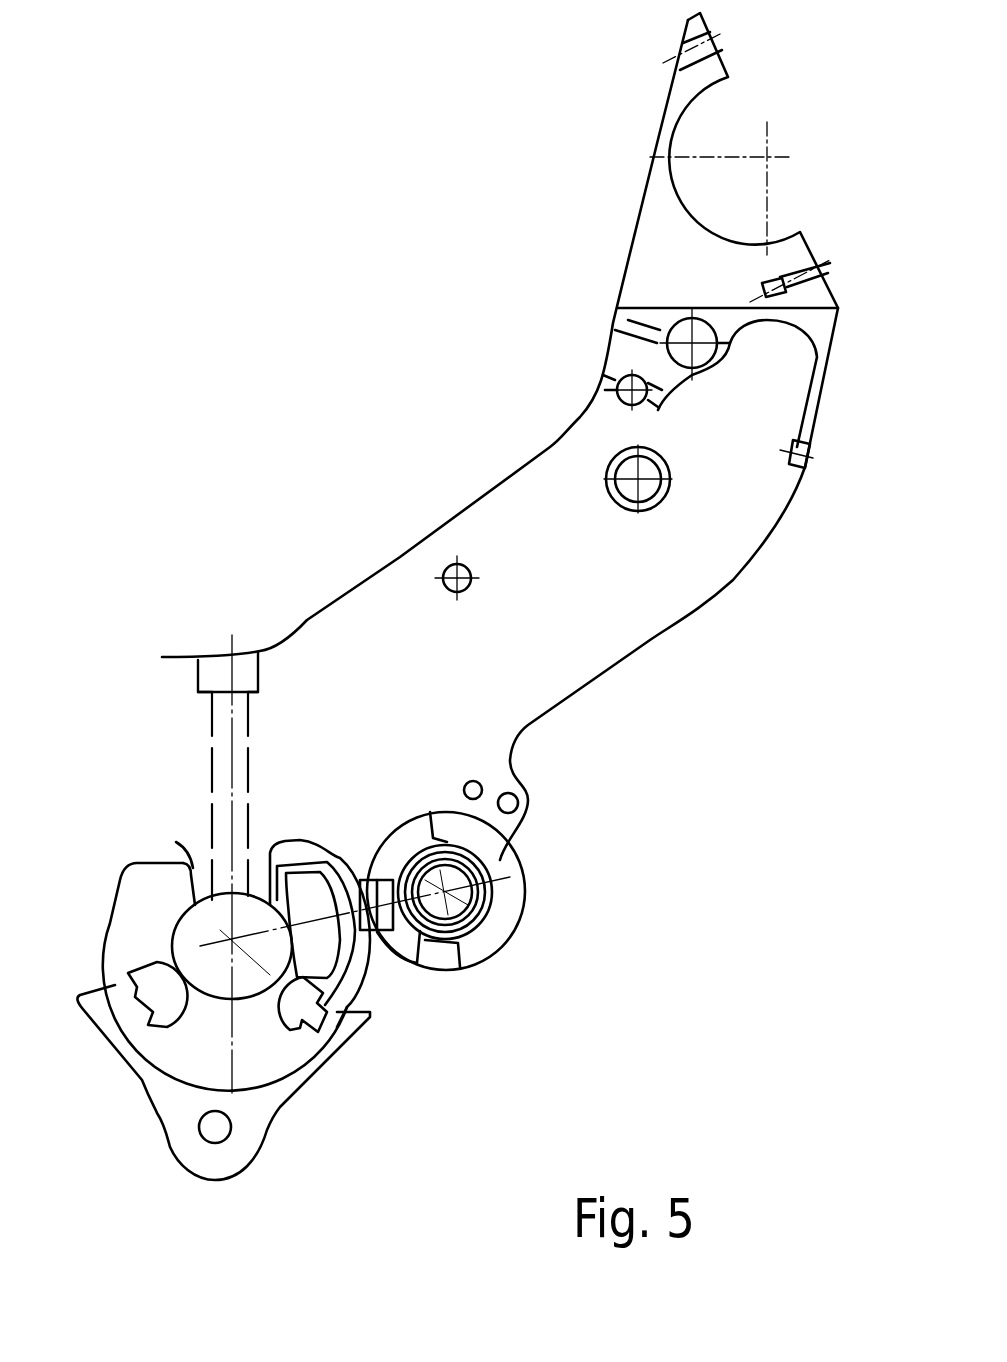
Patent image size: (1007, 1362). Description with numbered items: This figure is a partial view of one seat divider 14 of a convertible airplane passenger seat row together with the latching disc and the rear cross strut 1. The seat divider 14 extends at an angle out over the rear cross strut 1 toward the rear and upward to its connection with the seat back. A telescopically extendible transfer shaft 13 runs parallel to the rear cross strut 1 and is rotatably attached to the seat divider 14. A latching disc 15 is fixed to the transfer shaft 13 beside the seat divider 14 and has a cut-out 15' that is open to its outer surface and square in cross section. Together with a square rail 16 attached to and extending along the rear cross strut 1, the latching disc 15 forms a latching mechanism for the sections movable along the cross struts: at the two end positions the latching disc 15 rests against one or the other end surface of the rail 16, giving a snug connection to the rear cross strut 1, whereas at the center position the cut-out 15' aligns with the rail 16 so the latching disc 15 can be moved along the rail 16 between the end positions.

The rear cross strut 1 is at (258, 1037).
The transfer shaft 13 is at (488, 893).
The seat divider 14 is at (627, 603).
The latching disc 15 is at (541, 860).
The cut-out 15' is at (468, 991).
The rail 16 is at (377, 858).